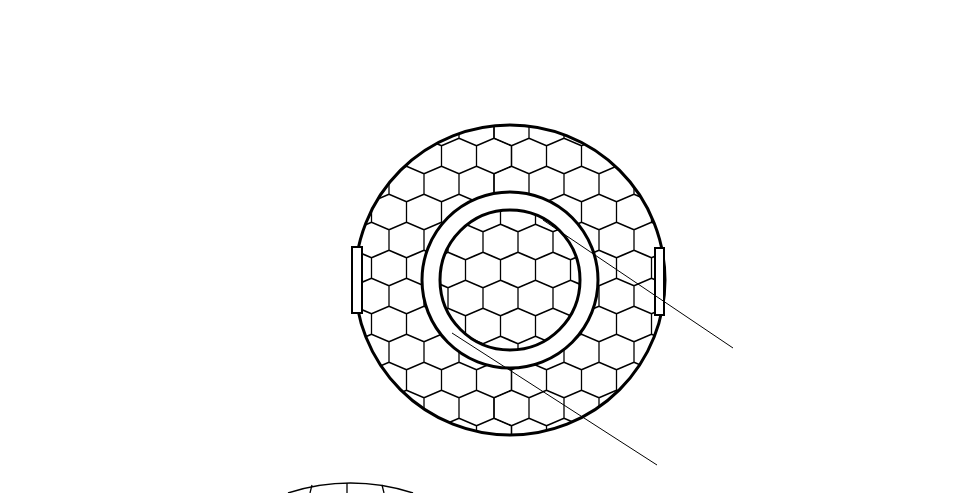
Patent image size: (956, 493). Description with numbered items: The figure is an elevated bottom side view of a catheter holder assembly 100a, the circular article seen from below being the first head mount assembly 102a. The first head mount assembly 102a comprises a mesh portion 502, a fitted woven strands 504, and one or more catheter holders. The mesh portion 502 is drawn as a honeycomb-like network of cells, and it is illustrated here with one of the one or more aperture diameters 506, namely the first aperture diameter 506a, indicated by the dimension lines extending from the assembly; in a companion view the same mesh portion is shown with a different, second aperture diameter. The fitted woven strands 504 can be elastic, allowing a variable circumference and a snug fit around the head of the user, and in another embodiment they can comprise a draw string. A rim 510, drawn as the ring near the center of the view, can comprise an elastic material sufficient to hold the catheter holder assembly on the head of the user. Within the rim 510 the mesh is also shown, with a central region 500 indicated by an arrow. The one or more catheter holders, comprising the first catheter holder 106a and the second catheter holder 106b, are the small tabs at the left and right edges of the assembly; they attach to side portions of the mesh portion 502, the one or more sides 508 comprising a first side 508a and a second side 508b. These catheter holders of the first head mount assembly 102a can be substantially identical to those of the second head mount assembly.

The catheter holder assembly 100a is at (262, 73).
The first head mount assembly 102a is at (510, 123).
The mesh portion 502 is at (542, 177).
The fitted woven strands 504 is at (440, 183).
The one or more aperture diameters 506 is at (592, 342).
The first aperture diameter 506a is at (711, 348).
The one or more sides 508 is at (469, 272).
The first side 508a is at (383, 260).
The second side 508b is at (652, 247).
The rim 510 is at (432, 225).
The central core region 500 is at (480, 307).
The first catheter holder 106a is at (353, 313).
The second catheter holder 106b is at (665, 248).